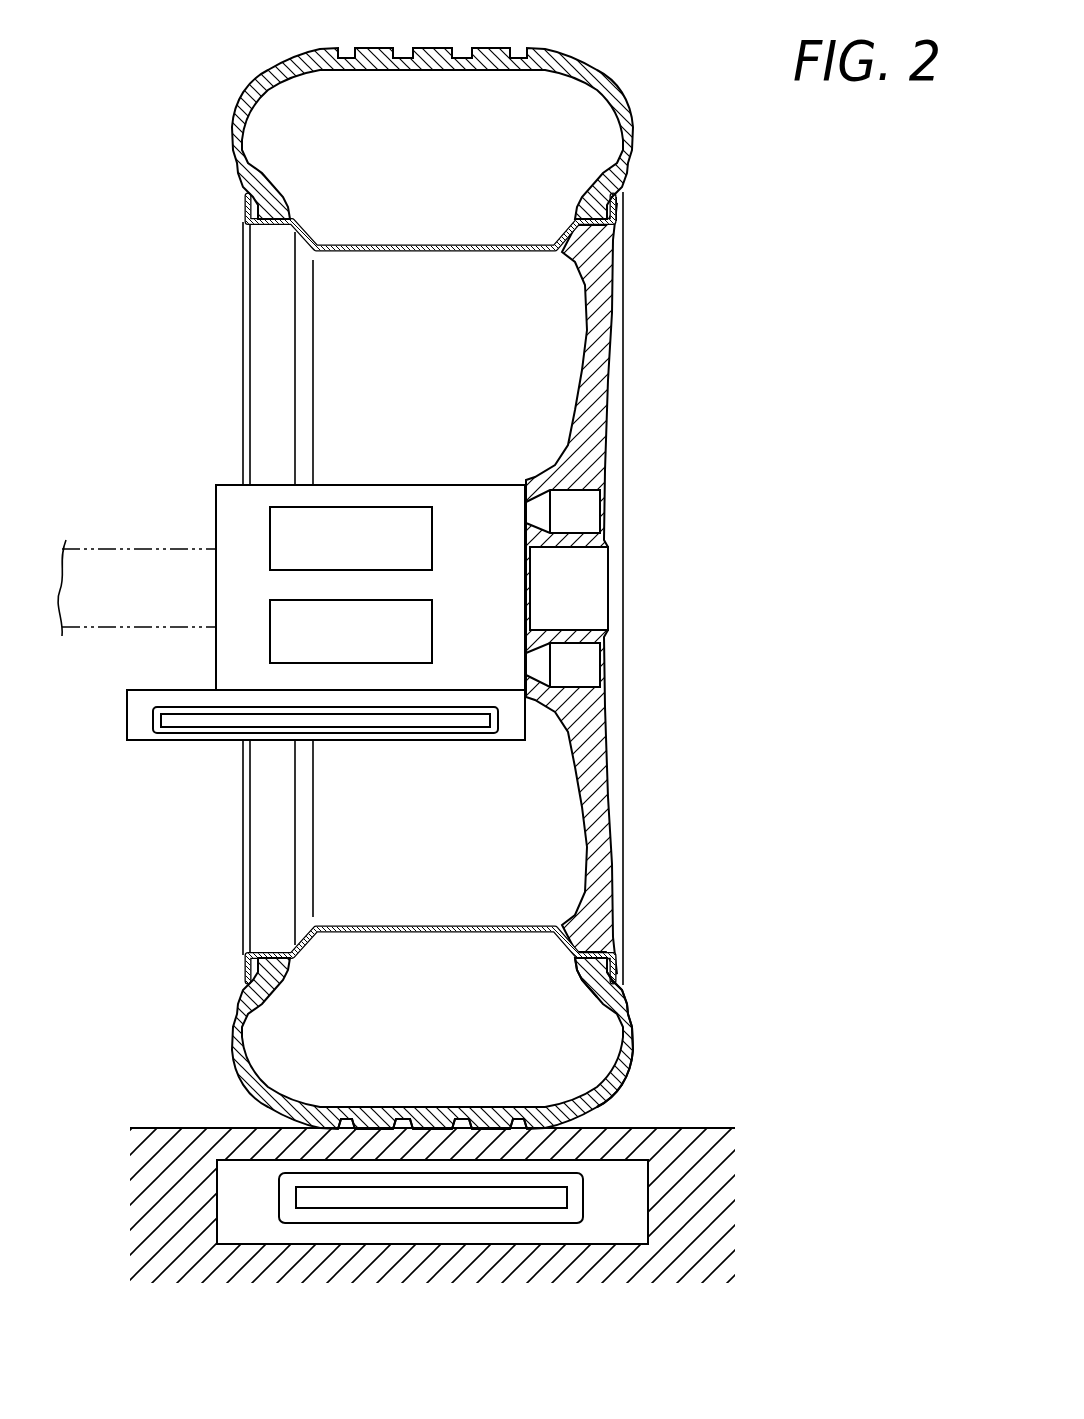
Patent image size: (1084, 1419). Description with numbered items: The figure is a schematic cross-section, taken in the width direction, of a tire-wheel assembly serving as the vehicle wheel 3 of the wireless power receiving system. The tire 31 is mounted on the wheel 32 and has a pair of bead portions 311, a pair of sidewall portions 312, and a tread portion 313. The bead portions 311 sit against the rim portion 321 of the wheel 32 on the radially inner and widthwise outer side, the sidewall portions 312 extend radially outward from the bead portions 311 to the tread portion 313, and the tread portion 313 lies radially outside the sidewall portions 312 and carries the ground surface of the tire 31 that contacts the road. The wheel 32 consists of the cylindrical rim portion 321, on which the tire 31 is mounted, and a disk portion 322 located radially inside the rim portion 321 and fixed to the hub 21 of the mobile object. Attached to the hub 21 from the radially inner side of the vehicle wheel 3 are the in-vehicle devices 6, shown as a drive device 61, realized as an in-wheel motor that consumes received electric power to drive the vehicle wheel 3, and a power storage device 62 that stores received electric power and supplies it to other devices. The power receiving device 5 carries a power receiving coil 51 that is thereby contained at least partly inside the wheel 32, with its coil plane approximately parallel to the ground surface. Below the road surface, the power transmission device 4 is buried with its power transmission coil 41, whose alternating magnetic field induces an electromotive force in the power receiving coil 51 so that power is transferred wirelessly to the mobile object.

The vehicle wheel 3 is at (503, 597).
The tire 31 is at (637, 131).
The bead portion 311 is at (604, 961).
The sidewall portion 312 is at (638, 1040).
The tread portion 313 is at (550, 1133).
The wheel 32 is at (632, 373).
The rim portion 321 is at (386, 256).
The disk portion 322 is at (592, 243).
The hub 21 is at (291, 541).
The in-vehicle device 6 is at (394, 585).
The drive device 61 is at (433, 537).
The power storage device 62 is at (433, 630).
The power receiving device 5 is at (295, 744).
The power receiving coil 51 is at (178, 742).
The power transmission device 4 is at (414, 1205).
The power transmission coil 41 is at (331, 1222).